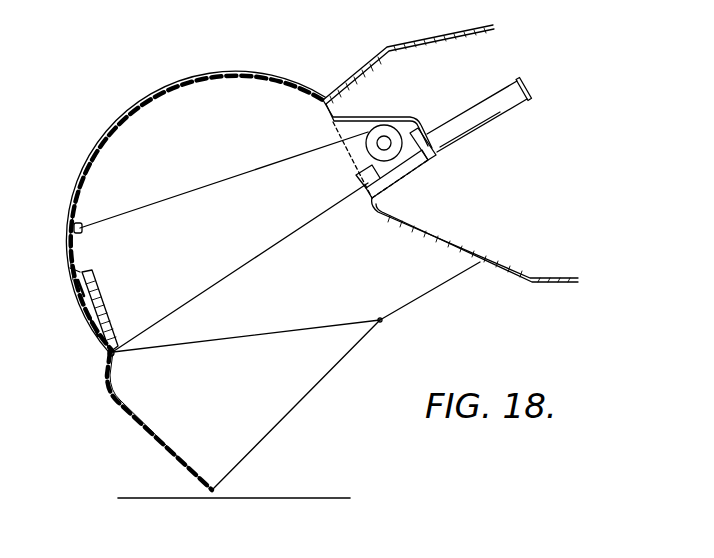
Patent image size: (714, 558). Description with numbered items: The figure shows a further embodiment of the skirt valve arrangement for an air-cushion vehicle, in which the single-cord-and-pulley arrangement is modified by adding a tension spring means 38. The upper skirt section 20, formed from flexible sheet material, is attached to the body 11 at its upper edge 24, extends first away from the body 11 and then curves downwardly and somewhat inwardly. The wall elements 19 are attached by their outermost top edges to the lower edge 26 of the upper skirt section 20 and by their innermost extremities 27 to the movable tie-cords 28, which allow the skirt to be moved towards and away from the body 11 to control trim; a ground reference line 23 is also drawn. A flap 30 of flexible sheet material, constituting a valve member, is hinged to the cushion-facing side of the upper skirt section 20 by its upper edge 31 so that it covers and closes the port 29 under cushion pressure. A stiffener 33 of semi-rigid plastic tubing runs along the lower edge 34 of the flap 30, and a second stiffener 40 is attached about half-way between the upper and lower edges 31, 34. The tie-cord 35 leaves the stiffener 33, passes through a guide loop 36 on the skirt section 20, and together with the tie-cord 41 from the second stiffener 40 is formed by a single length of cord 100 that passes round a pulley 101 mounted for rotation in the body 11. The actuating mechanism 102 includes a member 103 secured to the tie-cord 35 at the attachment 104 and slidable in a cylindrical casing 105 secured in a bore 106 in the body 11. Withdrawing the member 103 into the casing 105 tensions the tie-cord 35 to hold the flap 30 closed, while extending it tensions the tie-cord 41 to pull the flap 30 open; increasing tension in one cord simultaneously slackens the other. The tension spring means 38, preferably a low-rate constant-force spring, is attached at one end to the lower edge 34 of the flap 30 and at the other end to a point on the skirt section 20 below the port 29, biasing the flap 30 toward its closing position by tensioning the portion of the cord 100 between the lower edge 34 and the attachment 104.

The body 11 is at (428, 34).
The wall elements 19 is at (172, 447).
The upper skirt section 20 is at (250, 72).
The base line 23 is at (160, 497).
The upper edge 24 is at (323, 97).
The lower edge 26 is at (116, 357).
The innermost extremities 27 is at (378, 318).
The tie-cords 28 is at (415, 300).
The port 29 is at (72, 269).
The flap 30 is at (82, 200).
The upper edge 31 is at (93, 176).
The stiffener 33 is at (90, 272).
The lower edge 34 is at (78, 283).
The tie-cord 35 is at (217, 281).
The guide loop 36 is at (128, 348).
The tension spring means 38 is at (92, 322).
The second stiffener 40 is at (74, 228).
The tie-cord 41 is at (228, 178).
The cord 100 is at (333, 188).
The pulley 101 is at (387, 139).
The actuating mechanism 102 is at (504, 228).
The member 103 is at (401, 168).
The attachment 104 is at (368, 175).
The cylindrical casing 105 is at (495, 116).
The bore 106 is at (460, 141).